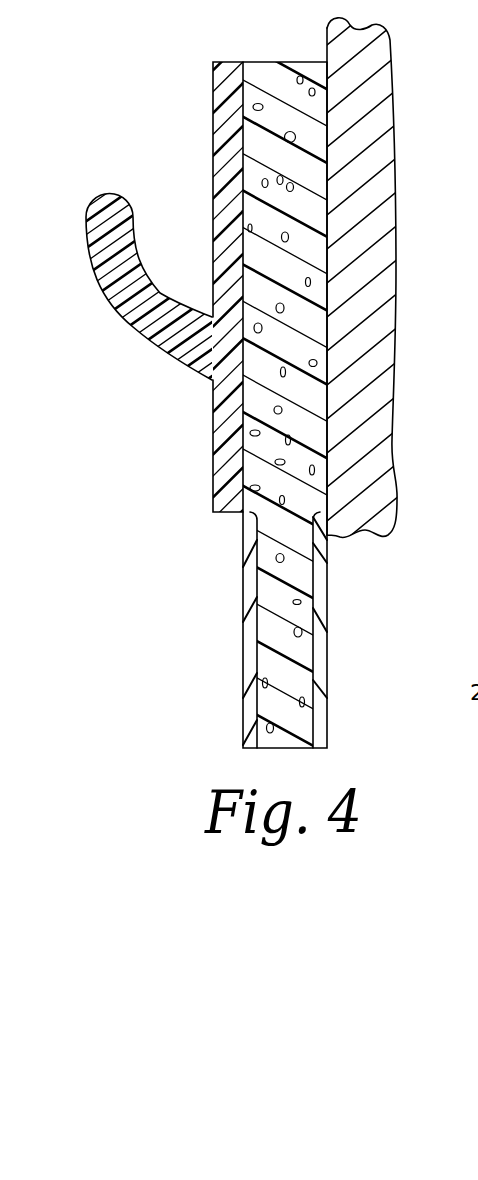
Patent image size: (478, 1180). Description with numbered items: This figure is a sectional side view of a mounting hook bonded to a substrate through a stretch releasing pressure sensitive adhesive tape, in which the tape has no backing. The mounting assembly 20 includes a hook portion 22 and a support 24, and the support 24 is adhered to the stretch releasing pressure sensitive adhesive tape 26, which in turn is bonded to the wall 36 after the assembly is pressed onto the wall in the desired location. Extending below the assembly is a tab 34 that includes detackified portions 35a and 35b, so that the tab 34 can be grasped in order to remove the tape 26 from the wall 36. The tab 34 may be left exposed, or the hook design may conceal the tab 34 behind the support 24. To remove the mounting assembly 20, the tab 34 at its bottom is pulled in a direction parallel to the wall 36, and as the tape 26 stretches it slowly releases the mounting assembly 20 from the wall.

The mounting assembly 20 is at (208, 398).
The hook portion 22 is at (92, 220).
The support 24 is at (218, 97).
The stretch releasing pressure sensitive adhesive tape 26 is at (263, 70).
The tab 34 is at (272, 632).
The detackified portion 35a is at (248, 582).
The detackified portion 35b is at (320, 650).
The wall 36 is at (387, 380).